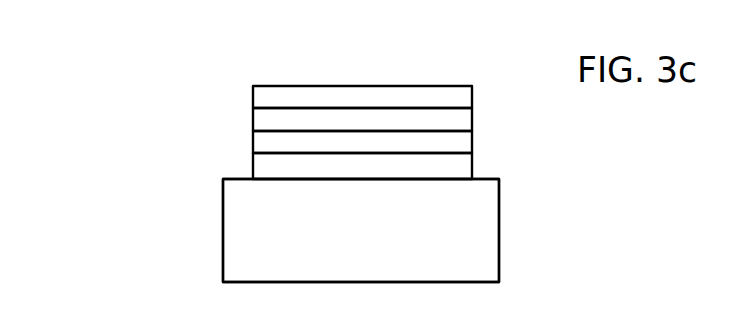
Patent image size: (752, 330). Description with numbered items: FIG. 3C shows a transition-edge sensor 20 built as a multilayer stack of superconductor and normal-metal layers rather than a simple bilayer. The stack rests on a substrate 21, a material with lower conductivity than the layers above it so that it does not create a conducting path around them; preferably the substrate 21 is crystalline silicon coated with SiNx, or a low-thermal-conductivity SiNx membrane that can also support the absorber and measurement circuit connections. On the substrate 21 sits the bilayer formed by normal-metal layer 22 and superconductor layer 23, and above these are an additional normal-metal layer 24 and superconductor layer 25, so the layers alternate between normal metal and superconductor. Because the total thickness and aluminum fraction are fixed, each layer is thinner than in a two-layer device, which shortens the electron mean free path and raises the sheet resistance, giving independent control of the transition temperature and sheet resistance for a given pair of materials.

The layered structure 20 is at (208, 202).
The substrate 21 is at (338, 248).
The normal-metal layer 22 is at (252, 167).
The superconductor layer 23 is at (252, 145).
The additional normal-metal layer 24 is at (252, 121).
The superconductor layer 25 is at (252, 90).